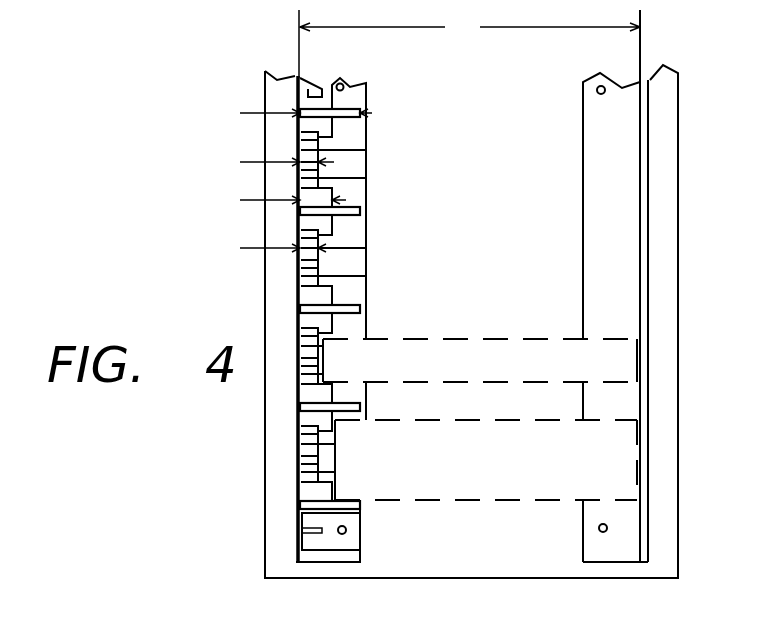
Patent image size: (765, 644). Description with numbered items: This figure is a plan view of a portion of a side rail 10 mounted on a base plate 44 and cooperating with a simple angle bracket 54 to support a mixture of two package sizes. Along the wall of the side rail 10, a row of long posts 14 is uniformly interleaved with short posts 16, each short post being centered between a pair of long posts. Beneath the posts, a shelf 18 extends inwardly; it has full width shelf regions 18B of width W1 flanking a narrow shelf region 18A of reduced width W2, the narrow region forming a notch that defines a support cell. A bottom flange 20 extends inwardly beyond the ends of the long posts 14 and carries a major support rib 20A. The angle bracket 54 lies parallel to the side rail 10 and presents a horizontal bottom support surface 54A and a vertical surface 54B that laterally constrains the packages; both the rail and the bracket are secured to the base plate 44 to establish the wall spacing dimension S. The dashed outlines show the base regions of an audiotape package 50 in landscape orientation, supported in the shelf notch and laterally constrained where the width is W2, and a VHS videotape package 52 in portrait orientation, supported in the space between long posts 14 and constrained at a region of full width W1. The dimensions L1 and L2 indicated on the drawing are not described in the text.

The side rail 10 is at (335, 573).
The long posts 14 is at (348, 107).
The short posts 16 is at (293, 267).
The shelf 18 is at (321, 75).
The narrow shelf region 18A is at (313, 272).
The full width shelf region 18B is at (330, 228).
The bottom flange 20 is at (353, 132).
The major support rib 20A is at (370, 166).
The base plate 44 is at (282, 460).
The audiotape package 50 is at (477, 372).
The VHS videotape package 52 is at (475, 472).
The angle bracket 54 is at (621, 573).
The horizontal bottom support surface 54A is at (605, 139).
The vertical surface 54B is at (640, 230).
The wall spacing dimension S is at (469, 44).
The length dimension L1 is at (290, 113).
The length dimension L2 is at (268, 163).
The full shelf width W1 is at (274, 198).
The reduced shelf width W2 is at (270, 247).